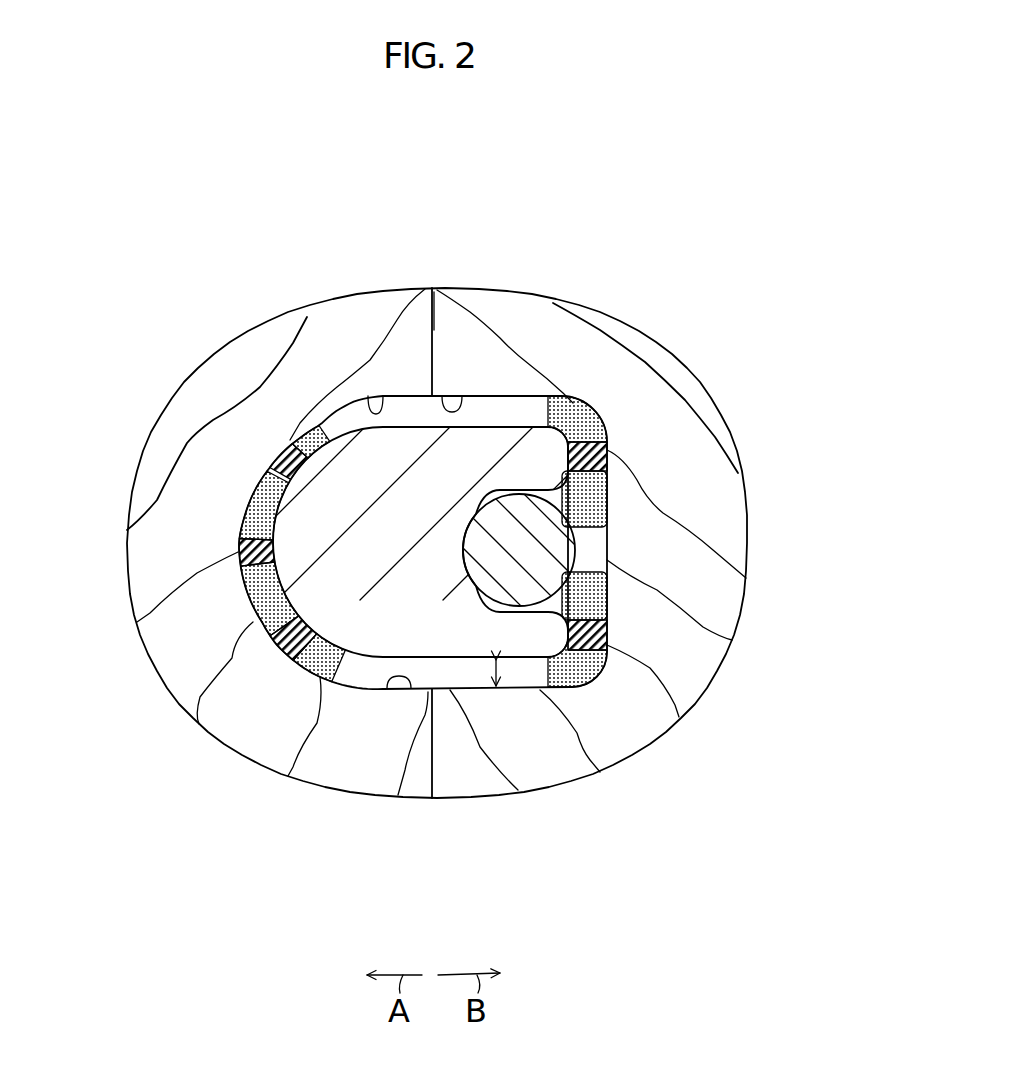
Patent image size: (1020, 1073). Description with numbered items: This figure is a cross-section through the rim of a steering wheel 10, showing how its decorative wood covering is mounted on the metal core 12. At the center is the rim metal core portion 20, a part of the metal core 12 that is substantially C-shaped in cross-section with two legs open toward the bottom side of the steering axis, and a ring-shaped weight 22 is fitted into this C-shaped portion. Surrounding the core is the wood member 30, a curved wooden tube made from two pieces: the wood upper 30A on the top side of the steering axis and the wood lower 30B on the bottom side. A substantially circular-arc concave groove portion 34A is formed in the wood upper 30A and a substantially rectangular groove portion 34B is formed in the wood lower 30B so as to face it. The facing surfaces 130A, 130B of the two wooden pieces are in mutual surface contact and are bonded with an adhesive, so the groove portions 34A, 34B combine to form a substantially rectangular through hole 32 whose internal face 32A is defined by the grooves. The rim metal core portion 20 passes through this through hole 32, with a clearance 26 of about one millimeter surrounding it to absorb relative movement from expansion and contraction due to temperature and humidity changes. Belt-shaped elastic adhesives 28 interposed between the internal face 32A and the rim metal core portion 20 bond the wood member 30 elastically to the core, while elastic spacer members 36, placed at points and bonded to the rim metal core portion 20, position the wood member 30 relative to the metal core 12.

The steering wheel 10 is at (677, 203).
The metal core 12 is at (535, 395).
The rim metal core portion 20 is at (525, 420).
The weight 22 is at (576, 549).
The clearance 26 is at (500, 675).
The elastic adhesive 28 is at (318, 428).
The wood member 30 is at (443, 230).
The wood upper 30A is at (305, 312).
The wood lower 30B is at (585, 308).
The facing surface 130A is at (440, 325).
The facing surface 130B is at (425, 303).
The through hole 32 is at (446, 683).
The internal face 32A is at (392, 690).
The groove portion 34A is at (369, 396).
The groove portion 34B is at (461, 396).
The spacer member 36 is at (285, 452).